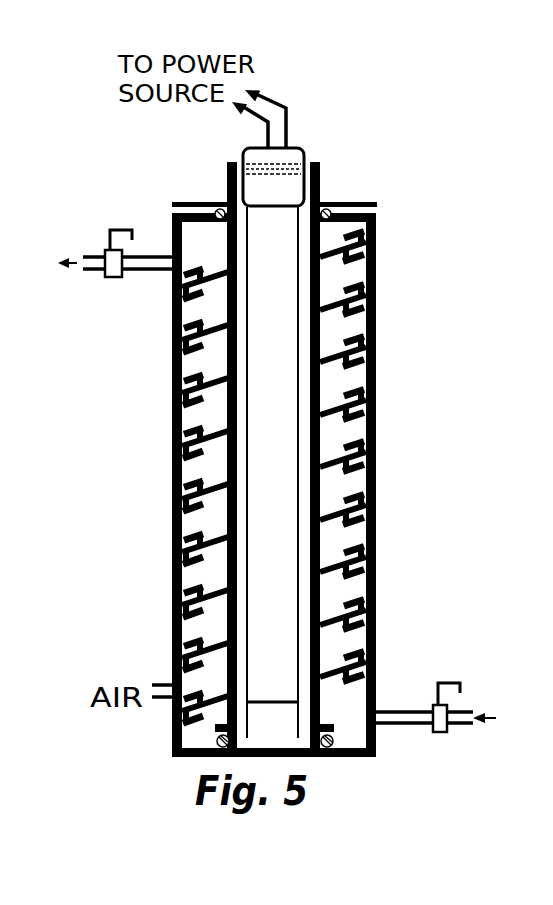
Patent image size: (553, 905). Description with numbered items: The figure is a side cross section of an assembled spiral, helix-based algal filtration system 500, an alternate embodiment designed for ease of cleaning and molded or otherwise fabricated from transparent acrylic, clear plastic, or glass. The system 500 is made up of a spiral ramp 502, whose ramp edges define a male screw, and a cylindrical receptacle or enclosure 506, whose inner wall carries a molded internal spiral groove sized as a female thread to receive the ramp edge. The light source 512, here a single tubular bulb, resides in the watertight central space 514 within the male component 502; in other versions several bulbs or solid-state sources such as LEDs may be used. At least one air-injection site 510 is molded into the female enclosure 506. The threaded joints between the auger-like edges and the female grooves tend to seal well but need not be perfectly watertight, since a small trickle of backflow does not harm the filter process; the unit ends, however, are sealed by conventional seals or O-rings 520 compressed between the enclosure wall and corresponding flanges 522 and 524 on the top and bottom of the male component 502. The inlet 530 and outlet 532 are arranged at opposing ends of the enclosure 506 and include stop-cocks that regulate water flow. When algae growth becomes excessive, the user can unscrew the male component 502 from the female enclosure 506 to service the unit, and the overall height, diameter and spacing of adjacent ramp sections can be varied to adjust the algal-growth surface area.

The spiral/helix-based filtration system 500 is at (428, 239).
The spiral ramp 502 is at (329, 478).
The cylindrical receptacle or enclosure 506 is at (436, 485).
The air-injection site 510 is at (117, 640).
The light source 512 is at (260, 414).
The watertight central space 514 is at (272, 291).
The seals or O-rings 520 is at (330, 210).
The flange 522 is at (320, 187).
The flange 524 is at (345, 727).
The inlet 530 is at (436, 730).
The outlet 532 is at (115, 214).